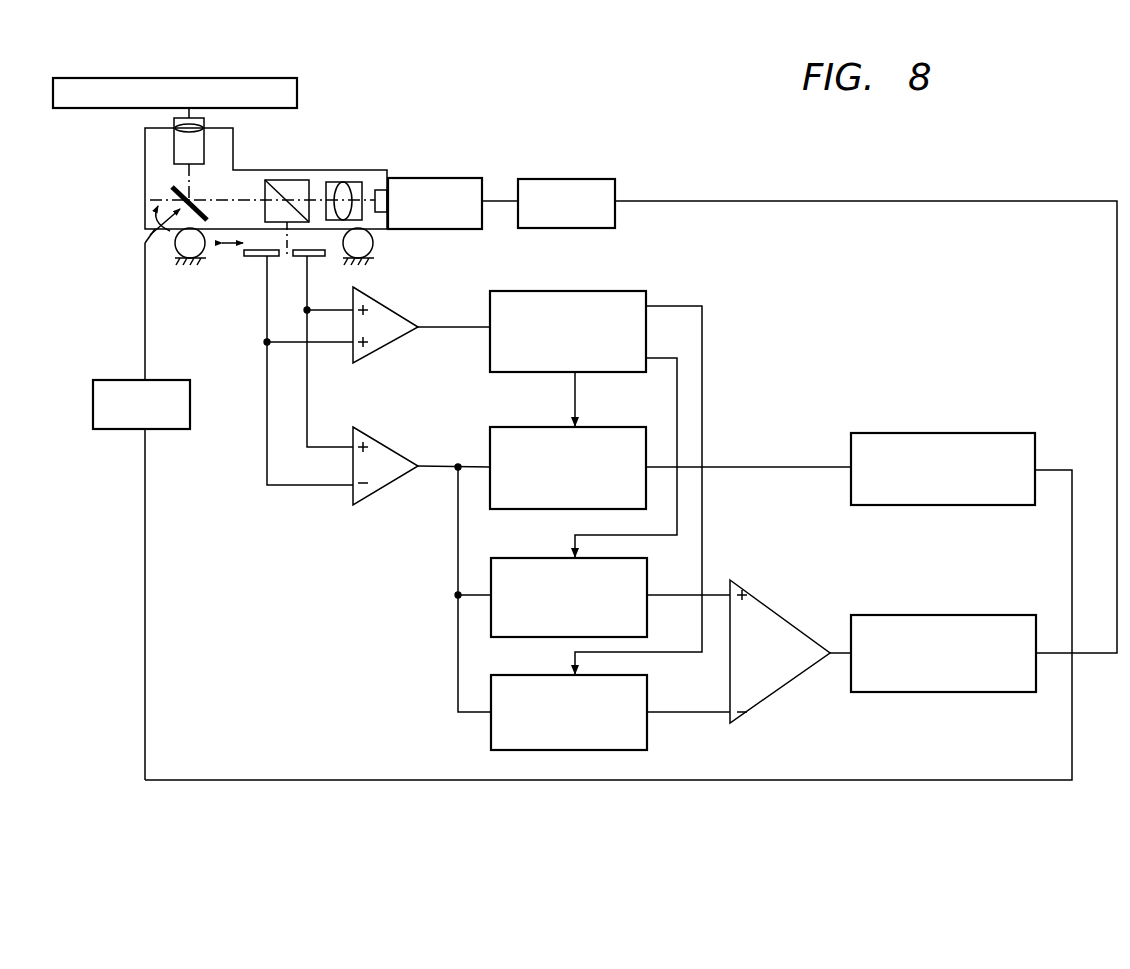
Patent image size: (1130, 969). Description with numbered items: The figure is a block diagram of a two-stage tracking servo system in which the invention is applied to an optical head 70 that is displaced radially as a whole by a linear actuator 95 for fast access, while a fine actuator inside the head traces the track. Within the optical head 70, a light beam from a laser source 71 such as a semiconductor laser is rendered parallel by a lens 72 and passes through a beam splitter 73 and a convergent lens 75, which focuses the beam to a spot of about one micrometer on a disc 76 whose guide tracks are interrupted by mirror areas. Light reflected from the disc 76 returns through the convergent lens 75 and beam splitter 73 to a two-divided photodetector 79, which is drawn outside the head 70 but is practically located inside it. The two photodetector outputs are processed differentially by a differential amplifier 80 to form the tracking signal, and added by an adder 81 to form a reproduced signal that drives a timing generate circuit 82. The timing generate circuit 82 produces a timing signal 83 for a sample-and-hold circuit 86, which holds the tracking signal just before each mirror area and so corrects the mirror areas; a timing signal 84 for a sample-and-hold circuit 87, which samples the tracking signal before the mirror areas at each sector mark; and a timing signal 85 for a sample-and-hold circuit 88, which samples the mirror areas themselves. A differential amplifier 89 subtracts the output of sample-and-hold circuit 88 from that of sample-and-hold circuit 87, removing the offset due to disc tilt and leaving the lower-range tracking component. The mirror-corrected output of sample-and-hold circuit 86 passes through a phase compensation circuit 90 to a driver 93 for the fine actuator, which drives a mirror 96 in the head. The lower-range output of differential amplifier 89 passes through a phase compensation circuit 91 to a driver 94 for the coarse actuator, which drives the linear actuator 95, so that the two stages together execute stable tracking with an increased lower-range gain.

The optical head 70 is at (252, 170).
The laser source 71 is at (380, 190).
The lens 72 is at (343, 182).
The beam splitter 73 is at (288, 180).
The convergent lens 75 is at (174, 153).
The disc 76 is at (297, 85).
The photodetector 79 is at (252, 258).
The differential amplifier 80 is at (380, 446).
The adder 81 is at (403, 313).
The timing generate circuit 82 is at (563, 291).
The timing signal 83 is at (574, 401).
The timing signal 84 is at (677, 414).
The timing signal 85 is at (702, 411).
The sample-and-hold circuit 86 is at (490, 445).
The sample-and-hold circuit 87 is at (507, 557).
The sample-and-hold circuit 88 is at (491, 752).
The differential amplifier 89 is at (767, 700).
The phase compensation circuit 90 is at (958, 433).
The phase compensation circuit 91 is at (960, 615).
The driver 93 is at (181, 380).
The driver 94 is at (553, 179).
The linear actuator 95 is at (475, 178).
The mirror 96 is at (168, 197).